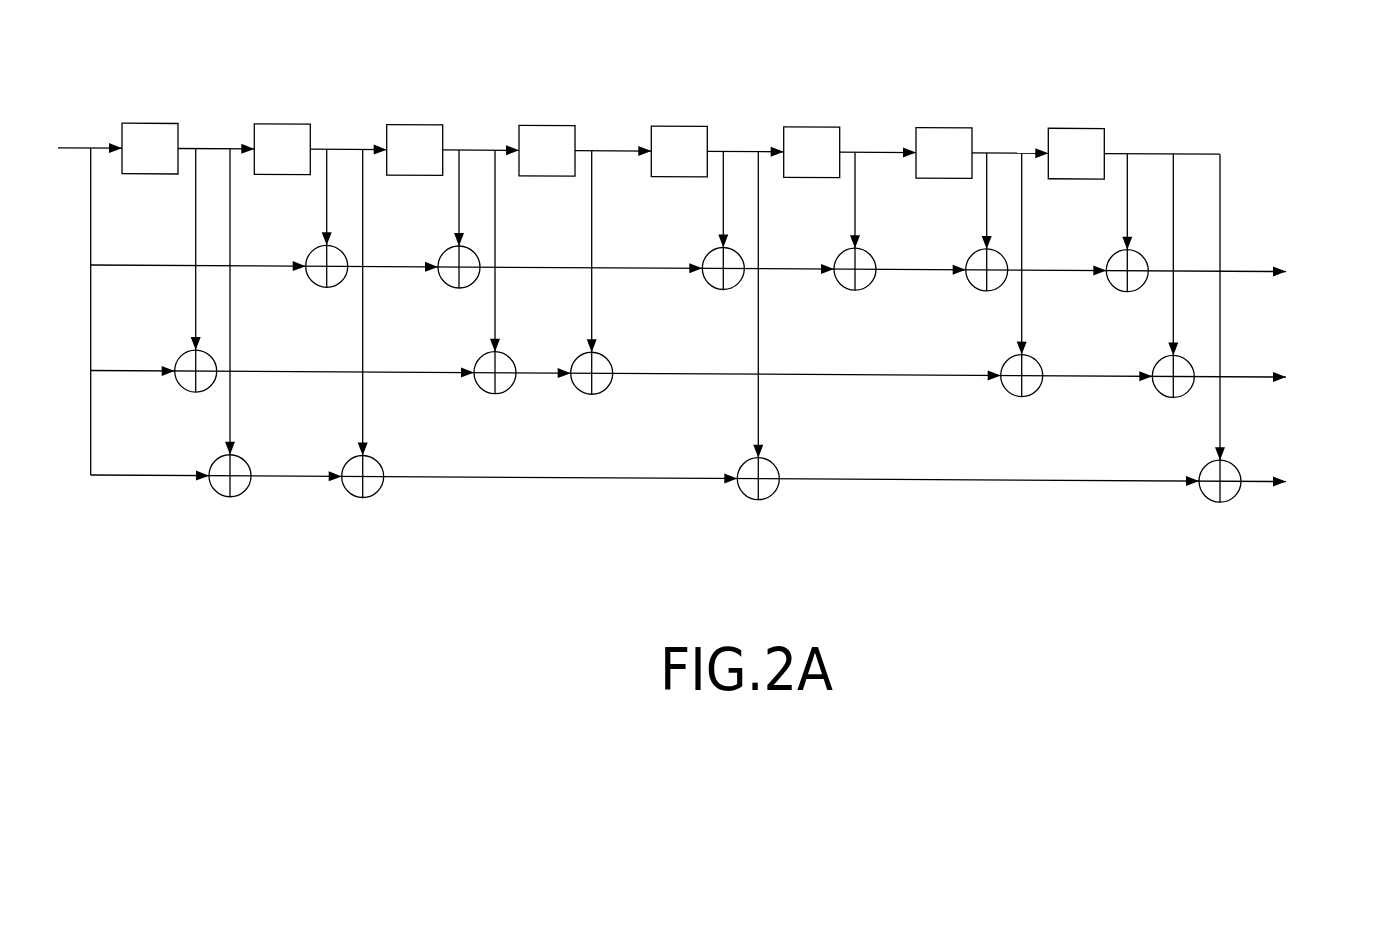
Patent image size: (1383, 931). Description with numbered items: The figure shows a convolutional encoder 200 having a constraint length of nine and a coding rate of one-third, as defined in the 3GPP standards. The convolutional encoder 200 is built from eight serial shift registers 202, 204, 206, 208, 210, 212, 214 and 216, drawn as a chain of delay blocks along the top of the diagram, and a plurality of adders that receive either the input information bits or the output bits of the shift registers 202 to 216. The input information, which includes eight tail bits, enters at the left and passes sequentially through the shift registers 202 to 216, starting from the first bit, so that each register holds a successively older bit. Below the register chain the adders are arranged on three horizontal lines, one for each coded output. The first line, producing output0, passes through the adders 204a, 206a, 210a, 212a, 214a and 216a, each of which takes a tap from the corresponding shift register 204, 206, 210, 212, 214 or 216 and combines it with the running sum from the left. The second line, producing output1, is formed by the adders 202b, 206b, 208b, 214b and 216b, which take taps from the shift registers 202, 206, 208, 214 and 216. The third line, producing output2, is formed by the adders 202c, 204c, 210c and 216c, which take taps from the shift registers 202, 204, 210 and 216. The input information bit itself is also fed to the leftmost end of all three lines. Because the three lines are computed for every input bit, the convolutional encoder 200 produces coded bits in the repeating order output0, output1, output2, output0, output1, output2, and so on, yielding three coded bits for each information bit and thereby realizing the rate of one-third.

The convolutional encoder 200 is at (1209, 26).
The shift register 202 is at (150, 122).
The shift register 204 is at (282, 122).
The shift register 206 is at (415, 122).
The shift register 208 is at (547, 122).
The shift register 210 is at (679, 122).
The shift register 212 is at (812, 122).
The shift register 214 is at (944, 122).
The shift register 216 is at (1076, 122).
The adder 204a is at (327, 286).
The adder 206a is at (459, 286).
The adder 210a is at (723, 286).
The adder 212a is at (855, 286).
The adder 214a is at (987, 286).
The adder 216a is at (1127, 286).
The adder 202b is at (196, 391).
The adder 206b is at (495, 391).
The adder 208b is at (592, 391).
The adder 214b is at (1022, 391).
The adder 216b is at (1173, 391).
The adder 202c is at (230, 496).
The adder 204c is at (363, 496).
The adder 210c is at (758, 496).
The adder 216c is at (1220, 496).